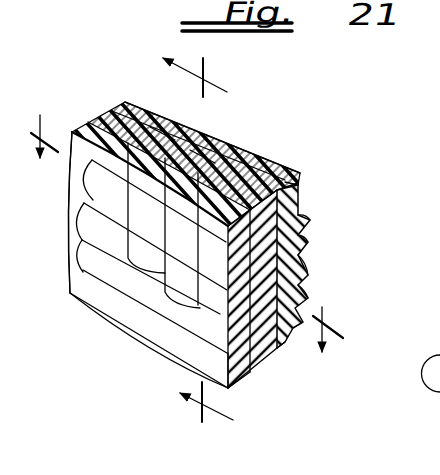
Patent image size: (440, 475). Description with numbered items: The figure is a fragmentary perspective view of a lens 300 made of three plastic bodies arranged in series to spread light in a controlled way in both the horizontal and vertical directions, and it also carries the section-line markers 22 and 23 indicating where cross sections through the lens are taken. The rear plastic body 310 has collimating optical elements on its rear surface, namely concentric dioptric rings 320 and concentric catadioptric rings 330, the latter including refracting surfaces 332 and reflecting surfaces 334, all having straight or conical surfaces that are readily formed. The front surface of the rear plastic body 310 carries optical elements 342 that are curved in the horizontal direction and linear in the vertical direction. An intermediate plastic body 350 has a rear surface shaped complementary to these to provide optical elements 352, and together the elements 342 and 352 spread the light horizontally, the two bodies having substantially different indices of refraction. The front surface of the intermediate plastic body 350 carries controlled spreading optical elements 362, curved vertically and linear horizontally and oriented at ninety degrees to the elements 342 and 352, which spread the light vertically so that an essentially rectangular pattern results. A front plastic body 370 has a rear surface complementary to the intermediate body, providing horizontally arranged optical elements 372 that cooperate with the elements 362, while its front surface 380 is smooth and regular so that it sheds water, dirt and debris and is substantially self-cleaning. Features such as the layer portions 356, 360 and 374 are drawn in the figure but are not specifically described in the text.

The lens 300 is at (101, 104).
The rear plastic body 310 is at (203, 127).
The concentric dioptric rings 320 is at (308, 279).
The concentric catadioptric rings 330 is at (307, 247).
The refracting surfaces 332 is at (307, 262).
The reflecting surfaces 334 is at (302, 237).
The optical elements 342 is at (298, 185).
The intermediate plastic body 350 is at (117, 111).
The optical elements 352 is at (224, 156).
The rib top surface 356 is at (195, 140).
The bottom layer 360 is at (255, 371).
The controlled spreading optical elements 362 is at (227, 353).
The front plastic body 370 is at (89, 121).
The optical elements 372 is at (236, 372).
The intermediate layer 374 is at (300, 307).
The front surface 380 is at (140, 327).
The section line 22- 22 is at (194, 233).
The section line 23- 23 is at (203, 249).